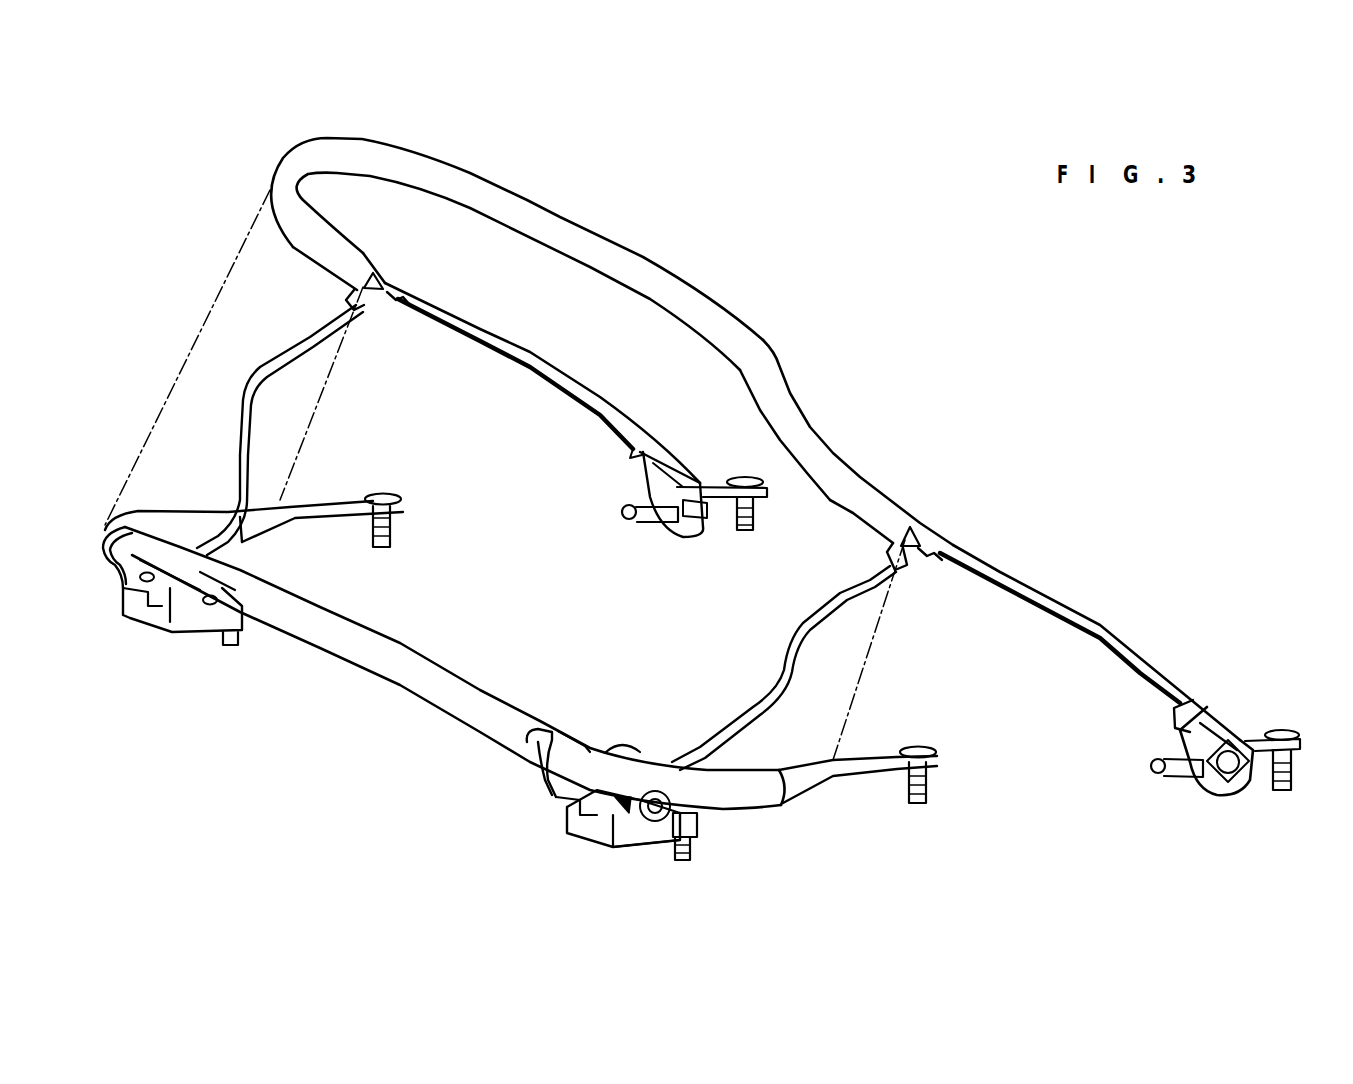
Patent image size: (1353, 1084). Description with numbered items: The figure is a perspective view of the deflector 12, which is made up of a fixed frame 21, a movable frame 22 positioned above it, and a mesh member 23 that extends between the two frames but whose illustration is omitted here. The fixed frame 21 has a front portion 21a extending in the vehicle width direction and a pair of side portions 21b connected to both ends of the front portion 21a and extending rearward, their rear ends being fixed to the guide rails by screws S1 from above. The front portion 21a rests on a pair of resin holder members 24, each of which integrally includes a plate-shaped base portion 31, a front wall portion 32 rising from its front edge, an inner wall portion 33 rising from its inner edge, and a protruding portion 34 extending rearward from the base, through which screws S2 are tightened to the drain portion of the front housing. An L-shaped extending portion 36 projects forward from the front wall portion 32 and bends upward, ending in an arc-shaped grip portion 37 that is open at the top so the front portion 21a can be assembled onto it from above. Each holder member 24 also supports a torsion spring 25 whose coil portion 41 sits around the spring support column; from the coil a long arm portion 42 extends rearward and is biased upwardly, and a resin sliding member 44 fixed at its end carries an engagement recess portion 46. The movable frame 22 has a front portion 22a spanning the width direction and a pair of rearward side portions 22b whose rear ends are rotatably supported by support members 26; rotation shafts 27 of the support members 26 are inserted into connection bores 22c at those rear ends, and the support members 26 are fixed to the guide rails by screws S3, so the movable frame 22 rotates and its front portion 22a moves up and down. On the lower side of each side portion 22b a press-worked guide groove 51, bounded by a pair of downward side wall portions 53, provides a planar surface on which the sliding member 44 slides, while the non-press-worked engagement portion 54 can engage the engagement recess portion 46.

The deflector 12 is at (924, 273).
The fixed frame 21 is at (398, 686).
The front portion 21a is at (318, 650).
The side portions 21b is at (192, 510).
The movable frame 22 is at (646, 257).
The front portion 22a is at (527, 200).
The side portions 22b is at (375, 265).
The connection bores 22c is at (1228, 782).
The mesh member 23 is at (206, 320).
The holder members 24 is at (148, 635).
The torsion spring 25 is at (241, 412).
The support members 26 is at (640, 527).
The rotation shafts 27 is at (1232, 740).
The base portion 31 is at (646, 846).
The front wall portion 32 is at (140, 615).
The inner wall portion 33 is at (196, 636).
The protruding portion 34 is at (699, 823).
The extending portion 36 is at (118, 583).
The grip portion 37 is at (105, 542).
The coil portion 41 is at (661, 830).
The arm portion 42 is at (266, 356).
The sliding member 44 is at (395, 305).
The engagement recess portion 46 is at (348, 295).
The guide groove 51 is at (478, 342).
The side wall portions 53 is at (558, 382).
The engagement portion 54 is at (380, 282).
The screws S1 is at (383, 490).
The screws S2 is at (234, 649).
The screws S3 is at (743, 477).